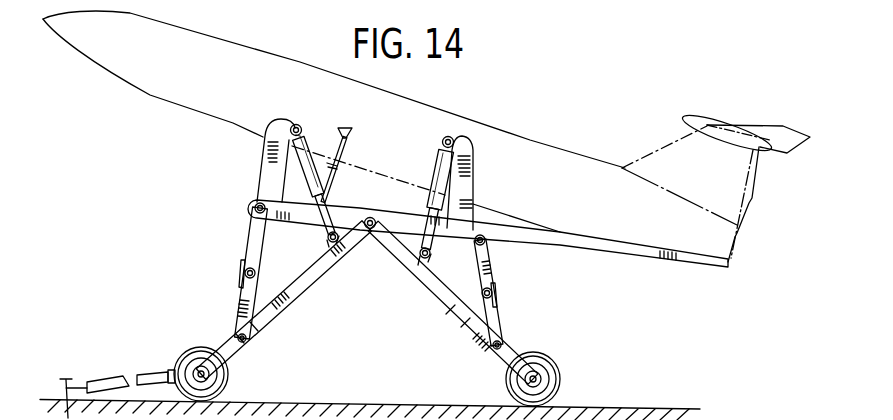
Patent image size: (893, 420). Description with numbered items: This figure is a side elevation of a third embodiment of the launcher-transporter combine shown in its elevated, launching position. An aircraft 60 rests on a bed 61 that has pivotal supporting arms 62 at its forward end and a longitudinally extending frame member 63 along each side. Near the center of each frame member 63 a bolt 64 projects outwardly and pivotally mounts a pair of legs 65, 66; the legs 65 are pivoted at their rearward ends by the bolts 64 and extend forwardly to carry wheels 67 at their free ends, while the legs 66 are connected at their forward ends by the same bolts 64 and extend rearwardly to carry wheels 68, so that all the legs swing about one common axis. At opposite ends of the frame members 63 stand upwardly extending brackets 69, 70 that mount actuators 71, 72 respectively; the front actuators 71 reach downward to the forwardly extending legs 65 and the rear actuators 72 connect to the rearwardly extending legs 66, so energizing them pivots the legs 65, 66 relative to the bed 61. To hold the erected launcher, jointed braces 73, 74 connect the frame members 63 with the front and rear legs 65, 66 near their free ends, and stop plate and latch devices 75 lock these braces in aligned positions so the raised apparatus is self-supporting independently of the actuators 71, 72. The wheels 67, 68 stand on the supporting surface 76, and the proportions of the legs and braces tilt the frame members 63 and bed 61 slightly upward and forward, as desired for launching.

The aircraft 60 is at (540, 140).
The bed 61 is at (533, 233).
The pivotal supporting arms 62 is at (336, 183).
The frame members 63 is at (453, 237).
The bolt 64 is at (373, 217).
The legs 65 is at (290, 307).
The legs 66 is at (460, 313).
The wheels 67 is at (223, 380).
The wheels 68 is at (553, 383).
The brackets 69 is at (267, 162).
The brackets 70 is at (473, 185).
The actuators 71 is at (303, 142).
The actuators 72 is at (438, 158).
The jointed braces 73 is at (250, 224).
The jointed braces 74 is at (493, 312).
The stop plate and latch devices 75 is at (245, 263).
The supporting surface 76 is at (630, 408).